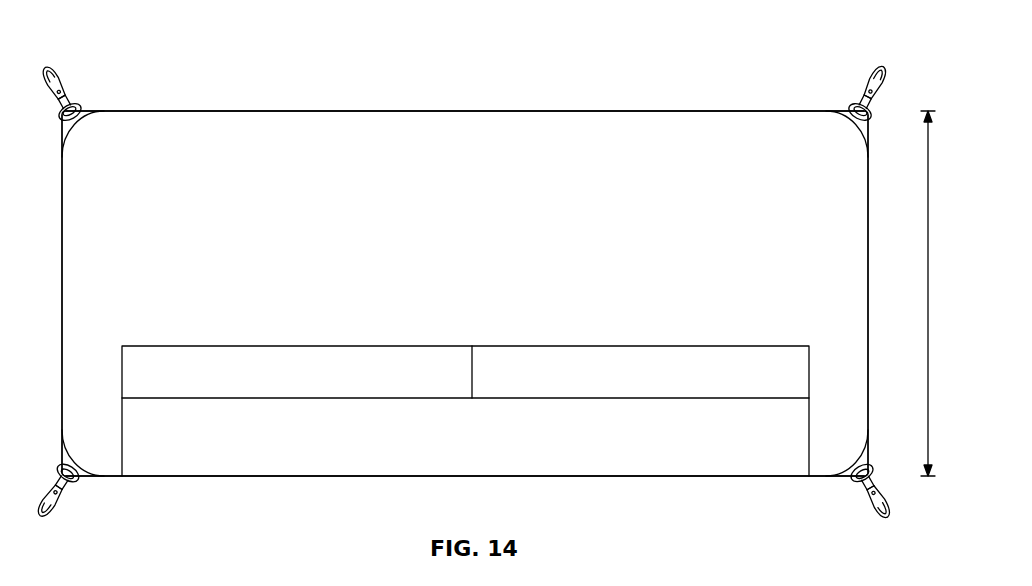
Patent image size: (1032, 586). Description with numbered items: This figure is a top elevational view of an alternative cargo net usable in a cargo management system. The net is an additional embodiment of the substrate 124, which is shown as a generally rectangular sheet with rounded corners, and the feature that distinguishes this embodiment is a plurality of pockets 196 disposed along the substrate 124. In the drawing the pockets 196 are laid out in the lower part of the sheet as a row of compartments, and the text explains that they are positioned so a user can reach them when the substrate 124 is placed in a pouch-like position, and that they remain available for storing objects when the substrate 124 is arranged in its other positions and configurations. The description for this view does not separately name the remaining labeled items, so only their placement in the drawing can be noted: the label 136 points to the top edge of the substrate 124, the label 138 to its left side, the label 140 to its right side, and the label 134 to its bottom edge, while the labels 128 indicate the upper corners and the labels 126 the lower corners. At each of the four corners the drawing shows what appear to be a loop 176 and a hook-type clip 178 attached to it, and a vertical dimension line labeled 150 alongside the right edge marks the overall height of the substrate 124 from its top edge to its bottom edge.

The substrate 124 is at (356, 132).
The lower corners 126 is at (90, 495).
The upper corners 128 is at (92, 63).
The bottom edge 134 is at (334, 477).
The top edge 136 is at (466, 111).
The left side edge 138 is at (63, 296).
The right side edge 140 is at (868, 258).
The height of cover sheet 150 is at (928, 335).
The corner loops 176 is at (100, 110).
The clips 178 is at (46, 62).
The pockets 196 is at (309, 358).